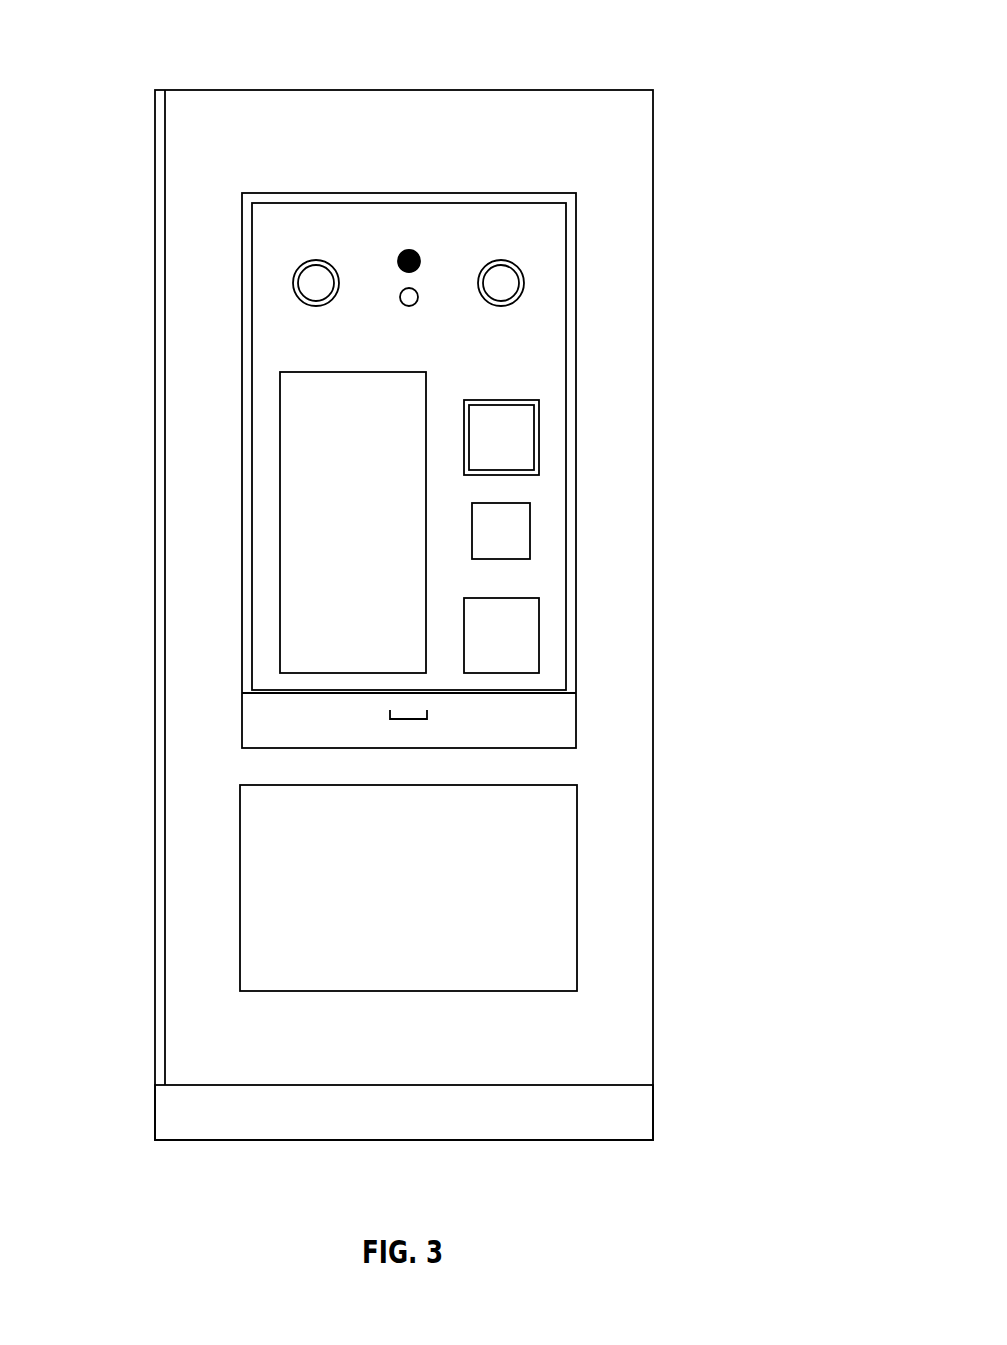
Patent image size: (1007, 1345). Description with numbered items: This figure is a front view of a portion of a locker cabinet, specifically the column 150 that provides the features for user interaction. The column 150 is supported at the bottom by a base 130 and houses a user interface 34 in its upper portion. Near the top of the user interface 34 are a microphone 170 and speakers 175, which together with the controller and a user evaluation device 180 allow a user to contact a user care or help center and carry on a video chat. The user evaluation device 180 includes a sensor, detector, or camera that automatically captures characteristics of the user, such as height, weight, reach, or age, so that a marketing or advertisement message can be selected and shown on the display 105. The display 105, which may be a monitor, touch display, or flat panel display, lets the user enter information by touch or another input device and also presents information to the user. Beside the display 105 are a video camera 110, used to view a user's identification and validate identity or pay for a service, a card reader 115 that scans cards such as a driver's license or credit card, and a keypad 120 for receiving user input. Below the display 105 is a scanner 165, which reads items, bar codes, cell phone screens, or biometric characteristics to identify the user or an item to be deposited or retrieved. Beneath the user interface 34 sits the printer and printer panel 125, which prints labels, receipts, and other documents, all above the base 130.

The column 150 is at (404, 574).
The user interface 34 is at (409, 433).
The microphone 170 is at (417, 252).
The speakers 175 is at (525, 283).
The user evaluation device 180 is at (419, 300).
The display 105 is at (307, 571).
The video camera 110 is at (539, 437).
The card reader 115 is at (530, 532).
The keypad 120 is at (539, 634).
The scanner 165 is at (427, 713).
The printer and printer panel 125 is at (573, 888).
The base 130 is at (606, 1112).